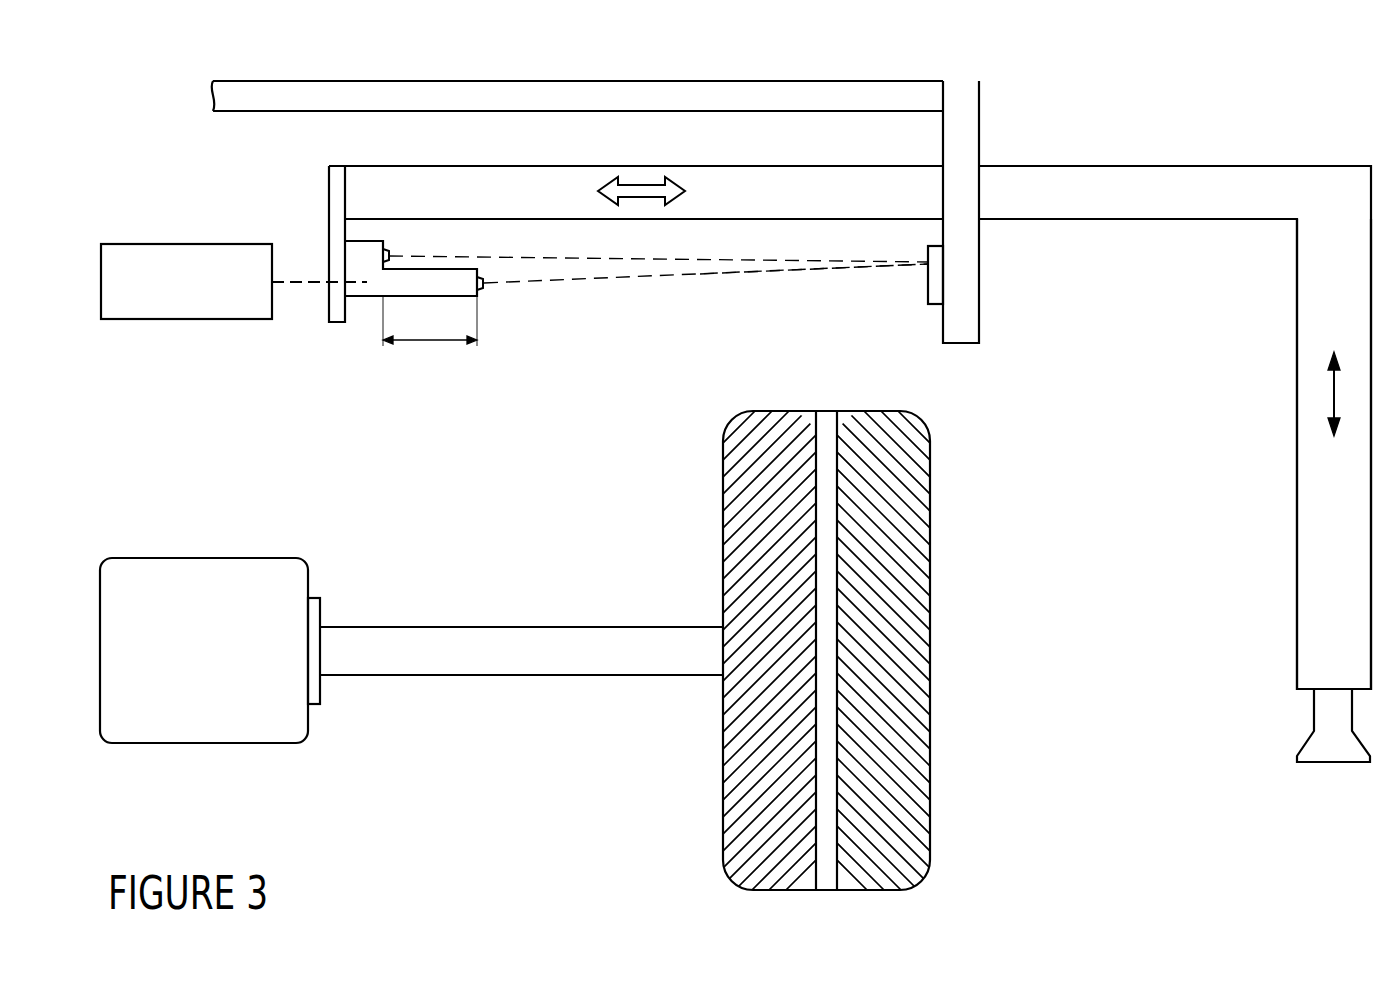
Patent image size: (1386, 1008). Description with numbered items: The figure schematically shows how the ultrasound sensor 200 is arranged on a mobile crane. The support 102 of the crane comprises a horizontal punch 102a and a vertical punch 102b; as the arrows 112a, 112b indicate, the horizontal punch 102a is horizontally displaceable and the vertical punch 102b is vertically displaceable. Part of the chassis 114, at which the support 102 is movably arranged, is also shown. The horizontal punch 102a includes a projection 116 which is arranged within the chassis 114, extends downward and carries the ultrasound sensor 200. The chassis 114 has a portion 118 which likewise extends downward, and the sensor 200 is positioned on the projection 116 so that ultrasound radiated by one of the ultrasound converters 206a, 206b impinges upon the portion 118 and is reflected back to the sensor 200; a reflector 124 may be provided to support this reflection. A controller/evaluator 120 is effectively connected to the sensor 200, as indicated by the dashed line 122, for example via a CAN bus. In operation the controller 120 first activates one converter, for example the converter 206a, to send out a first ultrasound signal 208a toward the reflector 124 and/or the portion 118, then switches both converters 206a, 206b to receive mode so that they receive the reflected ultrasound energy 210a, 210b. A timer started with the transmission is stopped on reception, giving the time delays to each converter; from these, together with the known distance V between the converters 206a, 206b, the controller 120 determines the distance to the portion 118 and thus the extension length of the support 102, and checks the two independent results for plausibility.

The support 102 is at (1271, 243).
The horizontal punch 102a is at (1162, 182).
The vertical punch 102b is at (1313, 527).
The arrow 112a is at (641, 182).
The arrow 112b is at (1320, 392).
The chassis 114 is at (594, 100).
The projection 116 is at (328, 312).
The portion 118 is at (966, 292).
The controller/evaluator 120 is at (183, 240).
The dashed line 122 is at (296, 278).
The reflector 124 is at (927, 292).
The ultrasound sensor 200 is at (362, 298).
The ultrasound converter 206a is at (390, 244).
The ultrasound converter 206b is at (486, 286).
The first ultrasound signal 208a is at (655, 258).
The reflected ultrasound energy 210a is at (706, 273).
The reflected ultrasound energy 210b is at (814, 309).